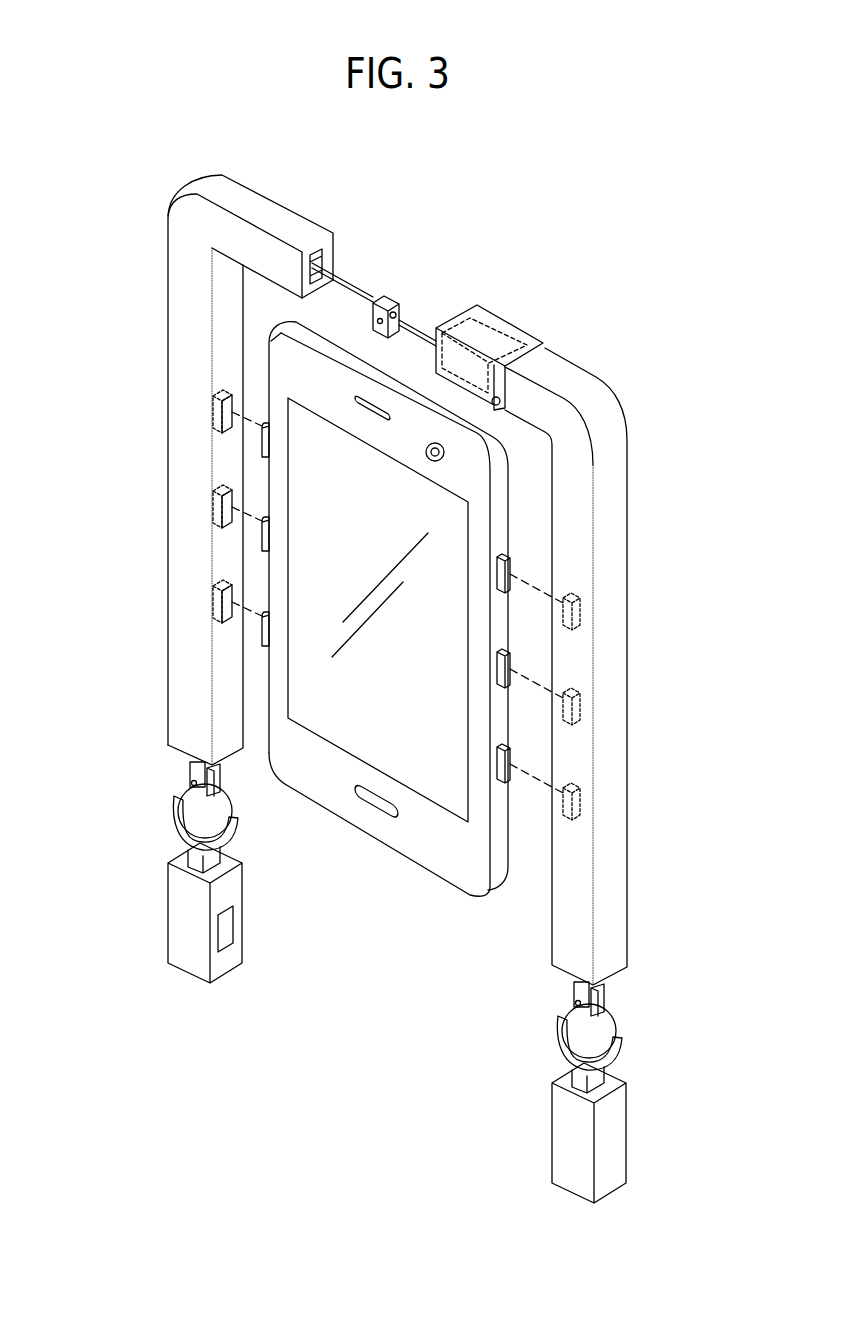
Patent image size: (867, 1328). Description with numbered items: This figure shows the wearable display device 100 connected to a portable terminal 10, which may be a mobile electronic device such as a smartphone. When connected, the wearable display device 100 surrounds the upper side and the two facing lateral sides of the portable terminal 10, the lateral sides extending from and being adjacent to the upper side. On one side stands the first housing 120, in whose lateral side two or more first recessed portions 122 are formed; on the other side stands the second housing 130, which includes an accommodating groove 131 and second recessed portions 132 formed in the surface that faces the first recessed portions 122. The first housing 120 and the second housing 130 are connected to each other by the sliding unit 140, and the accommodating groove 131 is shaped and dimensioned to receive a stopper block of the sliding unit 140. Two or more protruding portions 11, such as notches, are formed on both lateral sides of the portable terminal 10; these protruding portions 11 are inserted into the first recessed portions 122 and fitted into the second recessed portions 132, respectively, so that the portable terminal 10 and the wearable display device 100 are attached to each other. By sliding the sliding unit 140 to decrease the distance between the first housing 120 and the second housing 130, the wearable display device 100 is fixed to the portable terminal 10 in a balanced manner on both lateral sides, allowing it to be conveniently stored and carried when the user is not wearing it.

The portable terminal 10 is at (487, 609).
The protruding portions 11 is at (510, 660).
The wearable display device 100 is at (406, 689).
The first housing 120 is at (615, 775).
The first recessed portions 122 is at (575, 713).
The second housing 130 is at (257, 579).
The accommodating groove 131 is at (322, 264).
The second recessed portions 132 is at (229, 621).
The sliding unit 140 is at (388, 297).